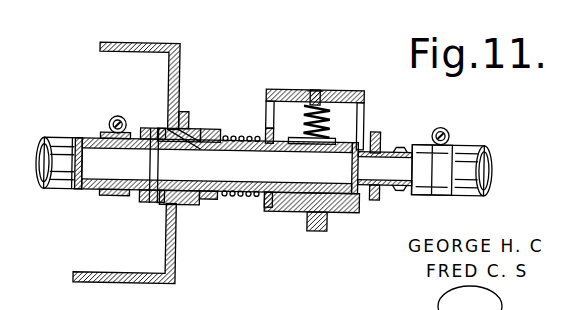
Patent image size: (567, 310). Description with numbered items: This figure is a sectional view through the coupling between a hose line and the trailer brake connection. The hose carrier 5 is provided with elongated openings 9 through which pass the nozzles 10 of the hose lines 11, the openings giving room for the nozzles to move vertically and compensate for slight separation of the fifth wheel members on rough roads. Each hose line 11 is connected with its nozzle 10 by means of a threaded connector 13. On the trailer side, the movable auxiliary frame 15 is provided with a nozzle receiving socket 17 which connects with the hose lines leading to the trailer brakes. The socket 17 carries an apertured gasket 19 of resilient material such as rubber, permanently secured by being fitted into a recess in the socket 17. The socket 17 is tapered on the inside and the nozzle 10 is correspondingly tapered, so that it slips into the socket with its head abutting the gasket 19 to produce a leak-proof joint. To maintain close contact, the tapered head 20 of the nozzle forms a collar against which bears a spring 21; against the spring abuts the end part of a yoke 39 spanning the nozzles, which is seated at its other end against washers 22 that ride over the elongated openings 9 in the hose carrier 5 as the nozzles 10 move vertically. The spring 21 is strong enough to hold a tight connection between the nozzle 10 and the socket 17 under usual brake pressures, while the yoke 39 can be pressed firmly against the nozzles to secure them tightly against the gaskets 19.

The hose carrier 5 is at (357, 134).
The elongated openings 9 is at (288, 113).
The nozzle 10 is at (226, 130).
The hose line 11 is at (464, 181).
The threaded connector 13 is at (447, 124).
The auxiliary frame 15 is at (178, 46).
The nozzle receiving socket 17 is at (165, 144).
The apertured gasket 19 is at (162, 143).
The tapered head 20 is at (193, 208).
The spring 21 is at (252, 198).
The washer 22 is at (263, 130).
The yoke 39 is at (211, 206).